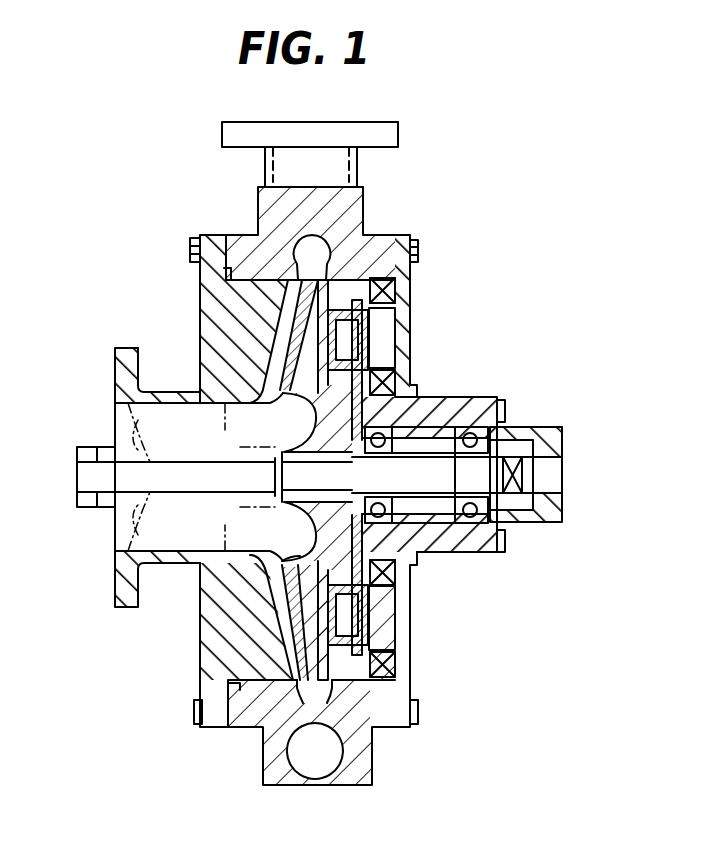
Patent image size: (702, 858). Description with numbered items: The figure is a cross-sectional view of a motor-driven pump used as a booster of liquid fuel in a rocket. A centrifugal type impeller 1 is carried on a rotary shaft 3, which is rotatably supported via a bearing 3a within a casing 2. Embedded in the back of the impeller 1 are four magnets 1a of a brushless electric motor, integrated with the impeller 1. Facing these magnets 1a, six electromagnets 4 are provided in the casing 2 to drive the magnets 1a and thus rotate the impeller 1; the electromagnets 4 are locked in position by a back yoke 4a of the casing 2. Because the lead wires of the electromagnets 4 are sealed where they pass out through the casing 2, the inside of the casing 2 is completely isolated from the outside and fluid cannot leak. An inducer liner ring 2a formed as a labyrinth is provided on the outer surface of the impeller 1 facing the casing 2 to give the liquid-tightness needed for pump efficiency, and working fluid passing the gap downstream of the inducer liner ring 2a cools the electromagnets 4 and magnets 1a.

The centrifugal type impeller 1 is at (285, 570).
The magnets 1a is at (350, 628).
The casing 2 is at (203, 235).
The inducer liner ring 2a is at (262, 390).
The rotary shaft 3 is at (128, 445).
The bearing 3a is at (497, 552).
The electromagnets 4 is at (410, 575).
The back yoke 4a is at (410, 235).